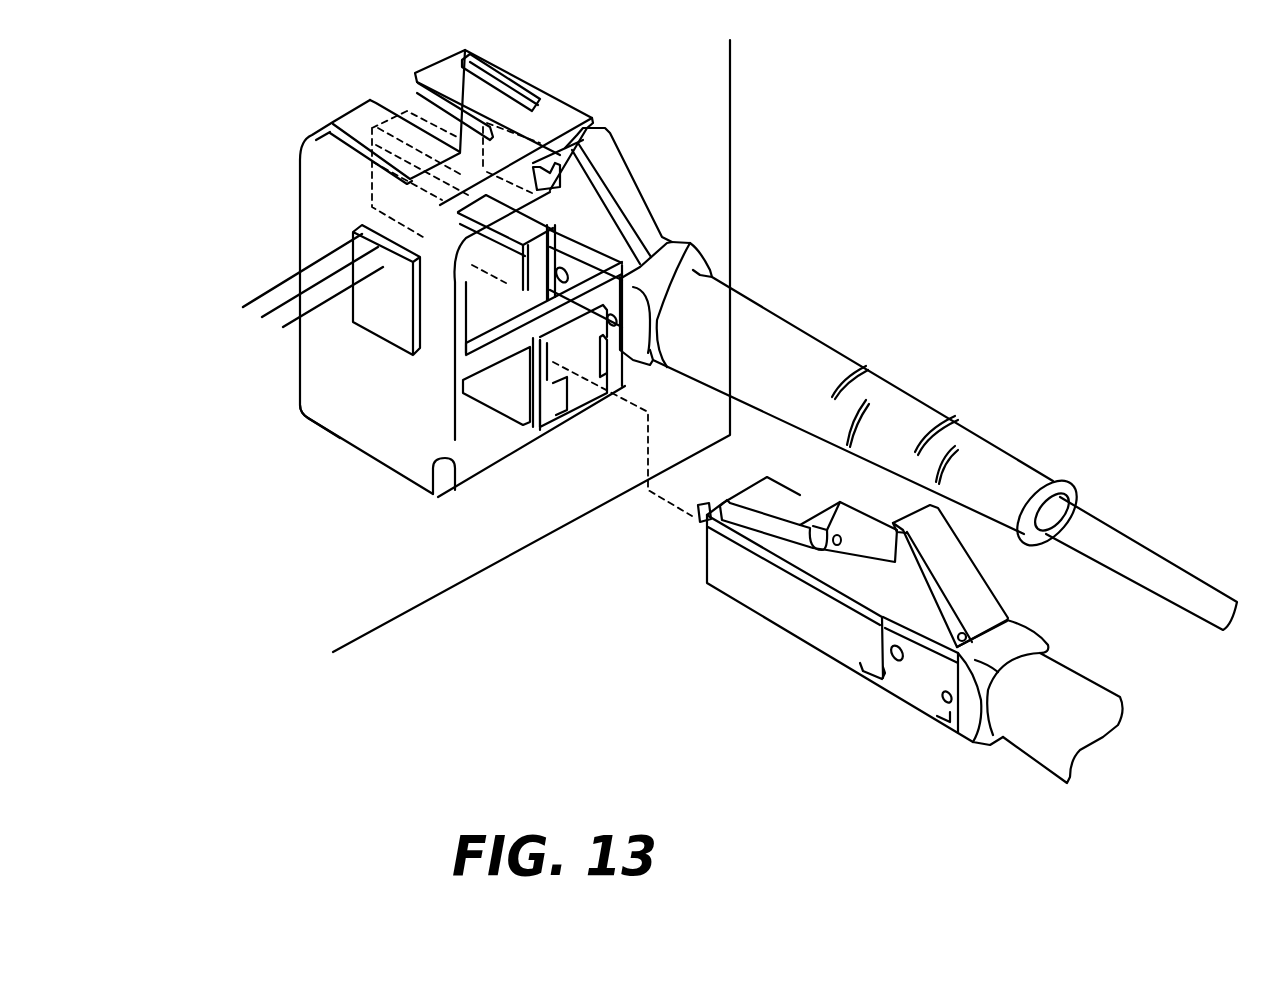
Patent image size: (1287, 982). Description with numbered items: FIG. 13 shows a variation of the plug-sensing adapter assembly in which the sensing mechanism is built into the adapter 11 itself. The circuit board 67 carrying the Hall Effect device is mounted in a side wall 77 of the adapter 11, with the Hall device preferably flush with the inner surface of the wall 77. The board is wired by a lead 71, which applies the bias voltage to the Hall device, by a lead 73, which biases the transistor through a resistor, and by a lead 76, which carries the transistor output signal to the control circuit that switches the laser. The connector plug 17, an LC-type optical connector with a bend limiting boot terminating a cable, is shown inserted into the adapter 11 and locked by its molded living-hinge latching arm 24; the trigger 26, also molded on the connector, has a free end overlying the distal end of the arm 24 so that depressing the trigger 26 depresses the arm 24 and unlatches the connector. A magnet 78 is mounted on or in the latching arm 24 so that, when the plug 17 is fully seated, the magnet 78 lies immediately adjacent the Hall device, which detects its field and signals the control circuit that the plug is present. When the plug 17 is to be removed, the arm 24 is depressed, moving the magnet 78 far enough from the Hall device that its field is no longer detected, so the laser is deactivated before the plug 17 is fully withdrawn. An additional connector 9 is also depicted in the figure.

The connector plug 9 is at (807, 542).
The adapter 11 is at (373, 462).
The connector plug 17 is at (1040, 737).
The latching arm 24 is at (852, 515).
The trigger 26 is at (960, 565).
The circuit board 67 is at (384, 330).
The lead 71 is at (268, 285).
The lead 73 is at (314, 316).
The lead 76 is at (270, 306).
The side wall 77 is at (347, 410).
The magnet 78 is at (837, 548).